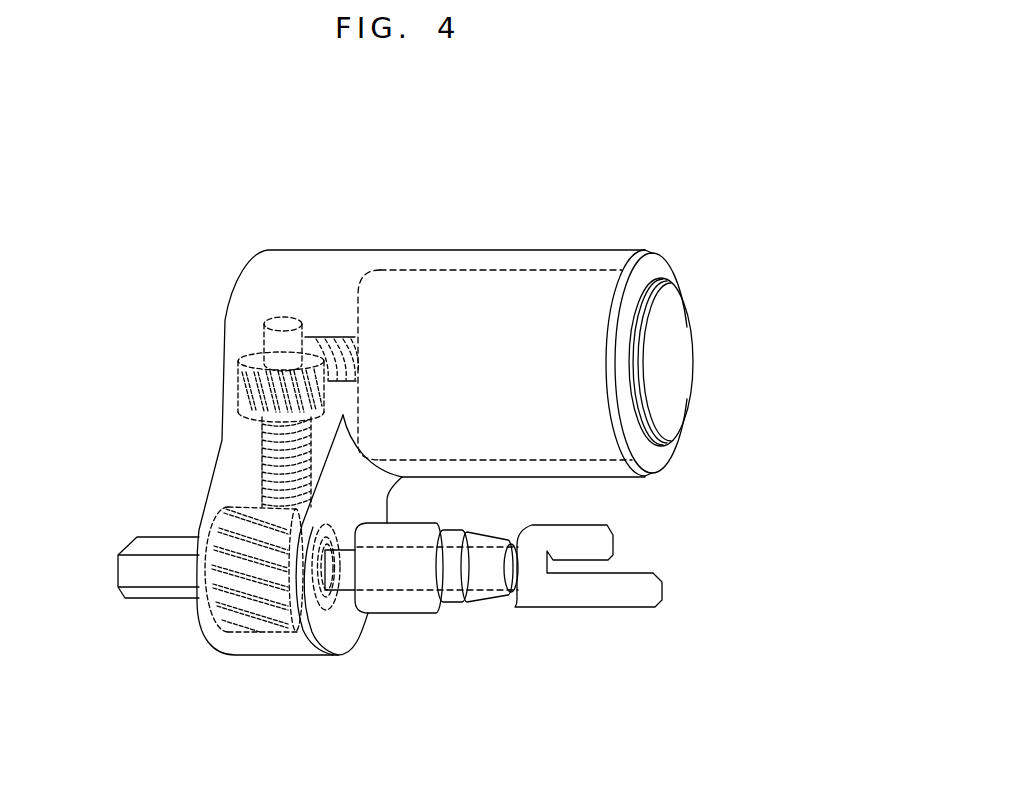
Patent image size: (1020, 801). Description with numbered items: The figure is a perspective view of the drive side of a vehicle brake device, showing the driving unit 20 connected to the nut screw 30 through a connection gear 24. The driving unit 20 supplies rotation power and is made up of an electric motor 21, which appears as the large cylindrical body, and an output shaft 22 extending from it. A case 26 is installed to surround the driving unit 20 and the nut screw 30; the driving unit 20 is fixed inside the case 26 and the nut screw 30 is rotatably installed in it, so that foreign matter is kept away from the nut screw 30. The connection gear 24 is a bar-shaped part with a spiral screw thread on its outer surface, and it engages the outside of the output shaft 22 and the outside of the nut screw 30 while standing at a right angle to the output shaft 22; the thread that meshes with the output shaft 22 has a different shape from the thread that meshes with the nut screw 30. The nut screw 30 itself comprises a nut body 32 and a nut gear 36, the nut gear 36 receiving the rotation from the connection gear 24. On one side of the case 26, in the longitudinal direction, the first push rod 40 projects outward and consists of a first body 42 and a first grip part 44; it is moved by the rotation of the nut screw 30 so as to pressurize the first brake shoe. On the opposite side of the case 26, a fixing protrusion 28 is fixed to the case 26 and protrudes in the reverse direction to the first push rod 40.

The driving unit 20 is at (704, 346).
The electric motor 21 is at (665, 320).
The output shaft 22 is at (337, 338).
The connection gear 24 is at (265, 442).
The case 26 is at (588, 255).
The fixing protrusion 28 is at (158, 563).
The nut screw 30 is at (273, 622).
The nut body 32 is at (317, 600).
The nut gear 36 is at (245, 613).
The first push rod 40 is at (508, 622).
The first body 42 is at (415, 596).
The first grip part 44 is at (543, 588).